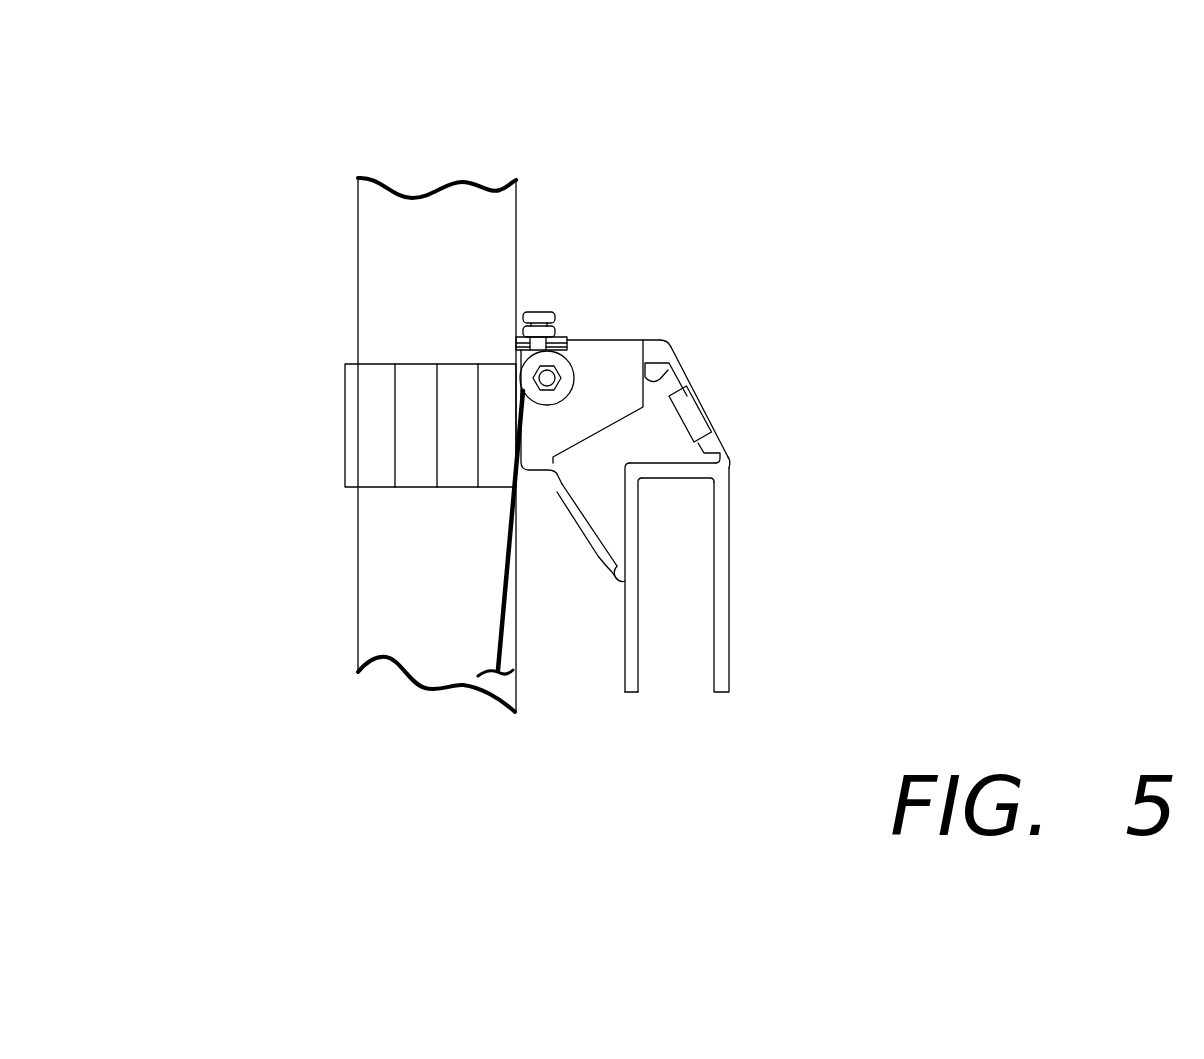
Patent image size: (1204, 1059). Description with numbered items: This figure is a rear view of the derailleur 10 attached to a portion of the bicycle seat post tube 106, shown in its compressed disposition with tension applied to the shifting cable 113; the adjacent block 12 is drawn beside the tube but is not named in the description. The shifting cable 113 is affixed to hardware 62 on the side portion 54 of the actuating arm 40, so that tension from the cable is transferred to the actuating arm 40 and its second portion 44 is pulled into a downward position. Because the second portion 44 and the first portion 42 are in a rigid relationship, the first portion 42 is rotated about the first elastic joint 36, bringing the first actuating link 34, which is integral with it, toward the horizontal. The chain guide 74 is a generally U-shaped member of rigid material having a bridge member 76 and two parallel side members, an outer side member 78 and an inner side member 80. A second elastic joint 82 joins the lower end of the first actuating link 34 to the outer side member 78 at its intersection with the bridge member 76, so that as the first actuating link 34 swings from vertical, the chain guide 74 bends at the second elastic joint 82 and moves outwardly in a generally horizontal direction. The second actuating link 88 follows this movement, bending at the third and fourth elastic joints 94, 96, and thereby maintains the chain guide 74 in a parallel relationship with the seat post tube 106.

The derailleur 10 is at (587, 170).
The frame member 12 is at (366, 428).
The first actuating link 34 is at (715, 433).
The first elastic joint 36 is at (680, 358).
The actuating arm 40 is at (652, 335).
The first portion 42 is at (673, 378).
The second portion 44 is at (597, 338).
The side portion 54 is at (468, 332).
The hardware 62 is at (517, 363).
The chain guide 74 is at (741, 674).
The bridge member 76 is at (675, 479).
The outer side member 78 is at (729, 512).
The inner side member 80 is at (641, 652).
The second elastic joint 82 is at (730, 452).
The second actuating link 88 is at (578, 535).
The third elastic joint 94 is at (554, 485).
The fourth elastic joint 96 is at (614, 580).
The seat post tube 106 is at (358, 263).
The shifting cable 113 is at (557, 481).